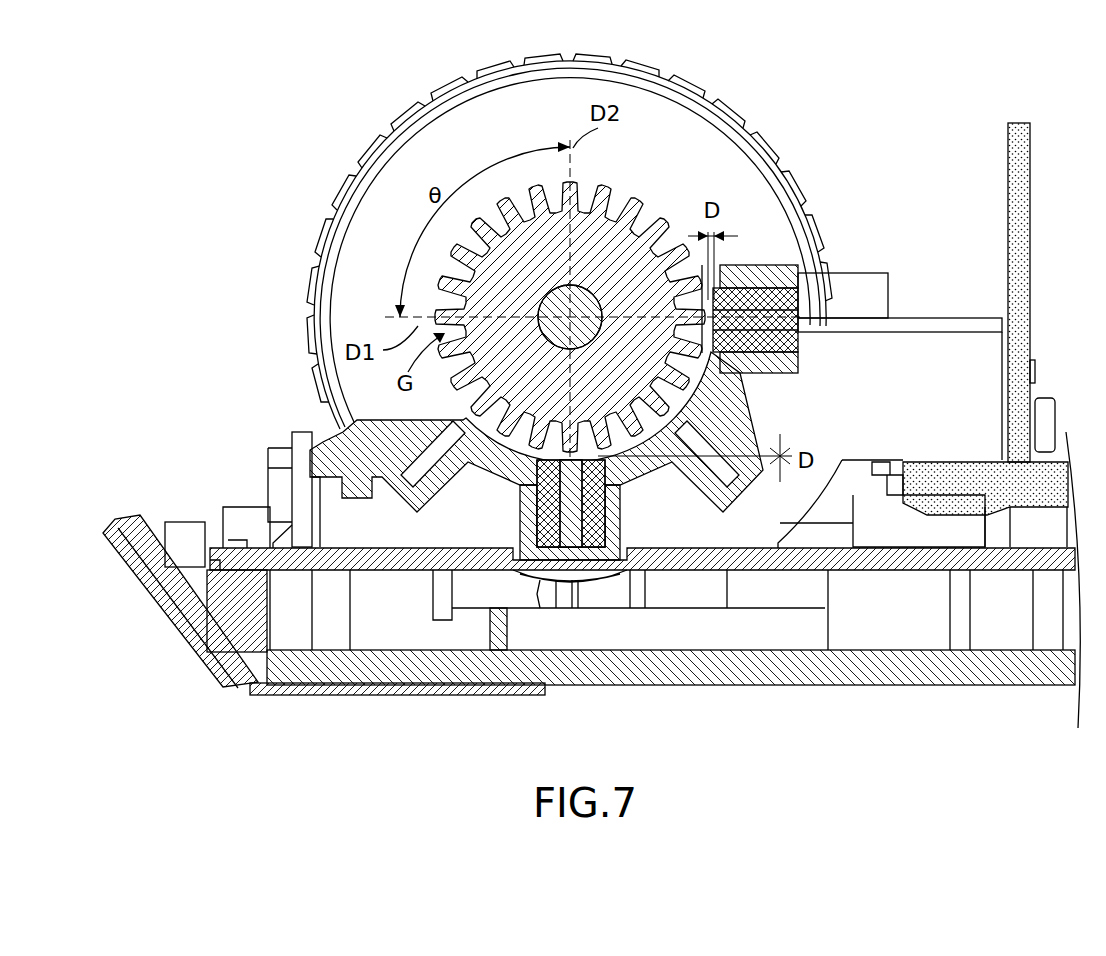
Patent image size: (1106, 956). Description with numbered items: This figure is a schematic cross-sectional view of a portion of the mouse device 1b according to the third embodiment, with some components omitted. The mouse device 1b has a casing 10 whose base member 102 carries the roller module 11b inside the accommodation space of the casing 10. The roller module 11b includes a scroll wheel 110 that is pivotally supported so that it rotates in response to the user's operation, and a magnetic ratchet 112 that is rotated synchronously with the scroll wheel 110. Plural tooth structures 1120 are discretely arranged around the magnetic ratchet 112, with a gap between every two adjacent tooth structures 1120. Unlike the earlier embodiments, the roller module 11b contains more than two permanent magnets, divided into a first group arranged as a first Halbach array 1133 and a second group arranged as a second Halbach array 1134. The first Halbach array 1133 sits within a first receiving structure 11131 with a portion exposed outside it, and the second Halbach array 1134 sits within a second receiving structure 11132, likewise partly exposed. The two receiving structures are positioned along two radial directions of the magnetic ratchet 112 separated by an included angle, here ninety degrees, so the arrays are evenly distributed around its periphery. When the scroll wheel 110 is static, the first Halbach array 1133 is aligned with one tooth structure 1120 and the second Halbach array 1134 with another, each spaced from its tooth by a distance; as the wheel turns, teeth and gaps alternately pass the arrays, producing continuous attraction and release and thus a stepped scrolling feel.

The mouse device 1b is at (959, 80).
The casing 10 is at (237, 611).
The base member 102 is at (203, 615).
The scroll wheel 110 is at (443, 147).
The magnetic ratchet 112 is at (512, 378).
The tooth structures 1120 is at (603, 185).
The roller module 11b is at (780, 128).
The first receiving structure 11131 is at (758, 286).
The second receiving structure 11132 is at (610, 500).
The first Halbach array 1133 is at (798, 337).
The second Halbach array 1134 is at (562, 520).